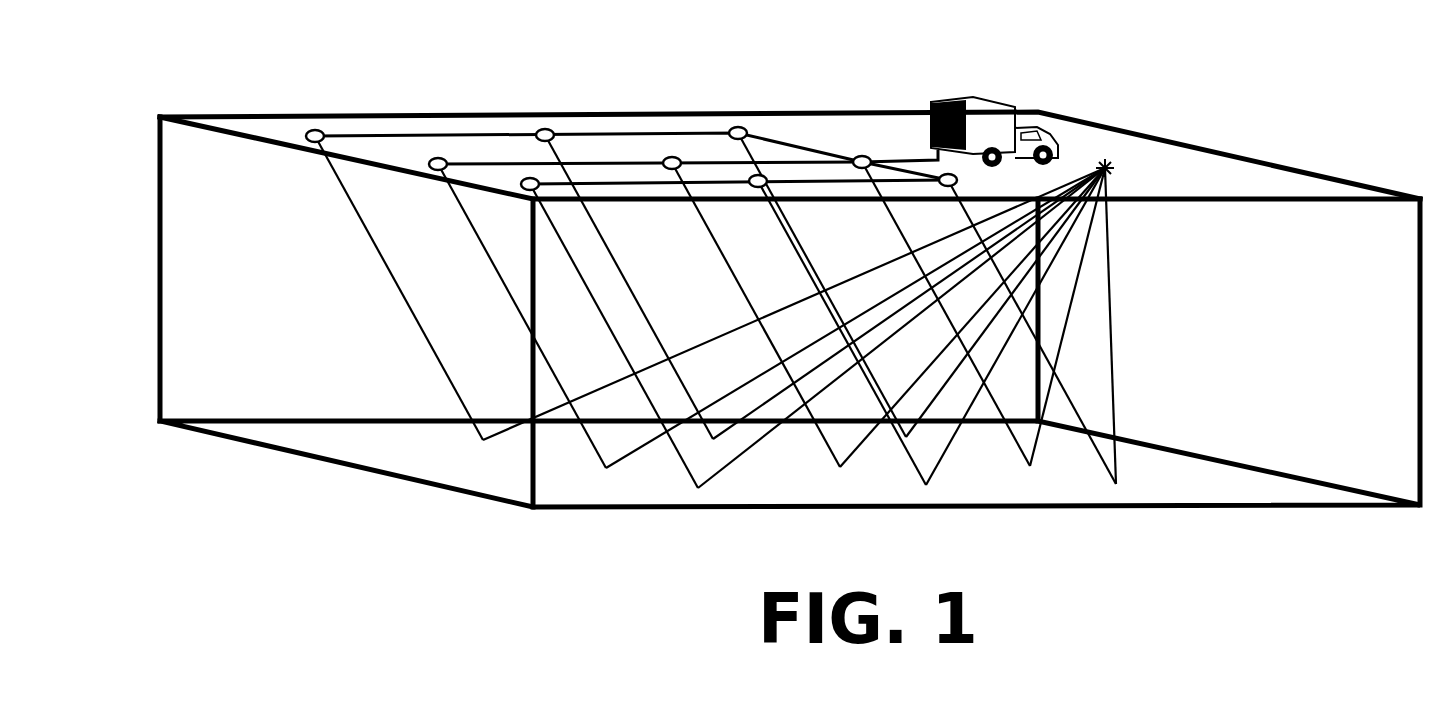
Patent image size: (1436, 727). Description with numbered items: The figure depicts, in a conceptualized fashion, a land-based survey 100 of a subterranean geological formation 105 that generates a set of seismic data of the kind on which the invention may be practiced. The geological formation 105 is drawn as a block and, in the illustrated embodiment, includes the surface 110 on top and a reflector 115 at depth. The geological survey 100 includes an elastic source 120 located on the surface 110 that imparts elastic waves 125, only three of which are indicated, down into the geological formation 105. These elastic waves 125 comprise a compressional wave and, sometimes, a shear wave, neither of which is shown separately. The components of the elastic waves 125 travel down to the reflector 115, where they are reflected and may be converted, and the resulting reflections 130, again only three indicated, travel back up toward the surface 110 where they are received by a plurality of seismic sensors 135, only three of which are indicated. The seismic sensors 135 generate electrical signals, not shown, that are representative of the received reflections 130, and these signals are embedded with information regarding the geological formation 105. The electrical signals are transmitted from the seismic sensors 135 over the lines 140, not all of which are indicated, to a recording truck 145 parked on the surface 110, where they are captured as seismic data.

The land-based survey 100 is at (432, 46).
The geological formation 105 is at (157, 280).
The surface 110 is at (1273, 183).
The reflector 115 is at (513, 487).
The elastic source 120 is at (1112, 168).
The elastic waves 125 is at (1057, 260).
The reflections 130 is at (528, 331).
The seismic sensors 135 is at (316, 129).
The lines 140 is at (663, 132).
The recording truck 145 is at (975, 101).